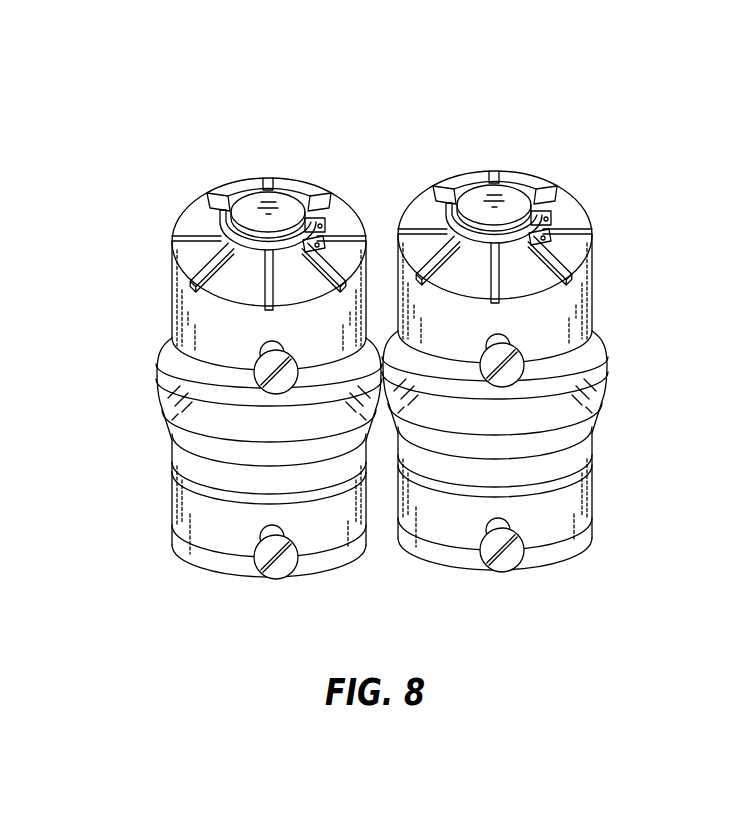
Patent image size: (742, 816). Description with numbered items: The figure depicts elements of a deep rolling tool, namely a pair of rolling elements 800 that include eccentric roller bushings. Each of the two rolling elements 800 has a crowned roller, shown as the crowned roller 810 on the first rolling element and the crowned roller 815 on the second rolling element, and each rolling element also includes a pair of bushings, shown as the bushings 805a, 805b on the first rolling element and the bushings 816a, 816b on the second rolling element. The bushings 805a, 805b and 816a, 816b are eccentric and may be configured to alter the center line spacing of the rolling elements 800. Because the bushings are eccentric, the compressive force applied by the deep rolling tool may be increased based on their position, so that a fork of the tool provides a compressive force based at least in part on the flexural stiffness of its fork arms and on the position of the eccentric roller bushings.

The rolling elements 800 is at (178, 151).
The bushing 805a is at (173, 286).
The crowned roller 810 is at (162, 387).
The bushing 805b is at (173, 483).
The bushing 816a is at (592, 262).
The crowned roller 815 is at (603, 375).
The bushing 816b is at (593, 484).